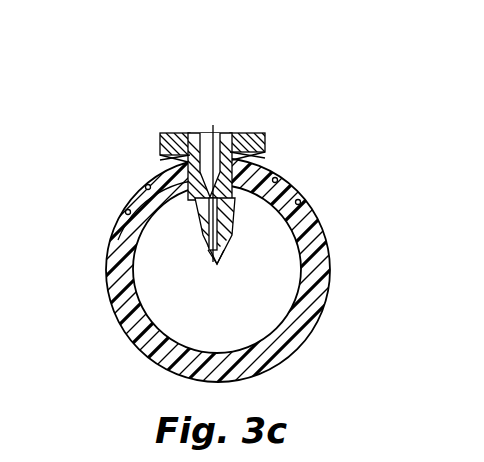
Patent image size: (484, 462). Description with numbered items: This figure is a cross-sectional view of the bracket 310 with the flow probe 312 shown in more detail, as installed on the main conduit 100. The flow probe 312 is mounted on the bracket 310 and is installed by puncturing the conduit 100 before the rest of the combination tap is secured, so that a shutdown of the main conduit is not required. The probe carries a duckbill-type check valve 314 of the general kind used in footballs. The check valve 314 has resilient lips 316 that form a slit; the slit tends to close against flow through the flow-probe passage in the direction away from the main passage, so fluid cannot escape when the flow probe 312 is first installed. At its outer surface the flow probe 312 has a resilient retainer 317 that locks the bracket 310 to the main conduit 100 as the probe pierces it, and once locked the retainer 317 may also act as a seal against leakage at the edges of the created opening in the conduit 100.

The main conduit 100 is at (322, 221).
The bracket 310 is at (185, 128).
The flow probe 312 is at (246, 209).
The duckbill-type check valve 314 is at (234, 130).
The resilient lips 316 is at (215, 263).
The resilient retainer 317 is at (263, 149).